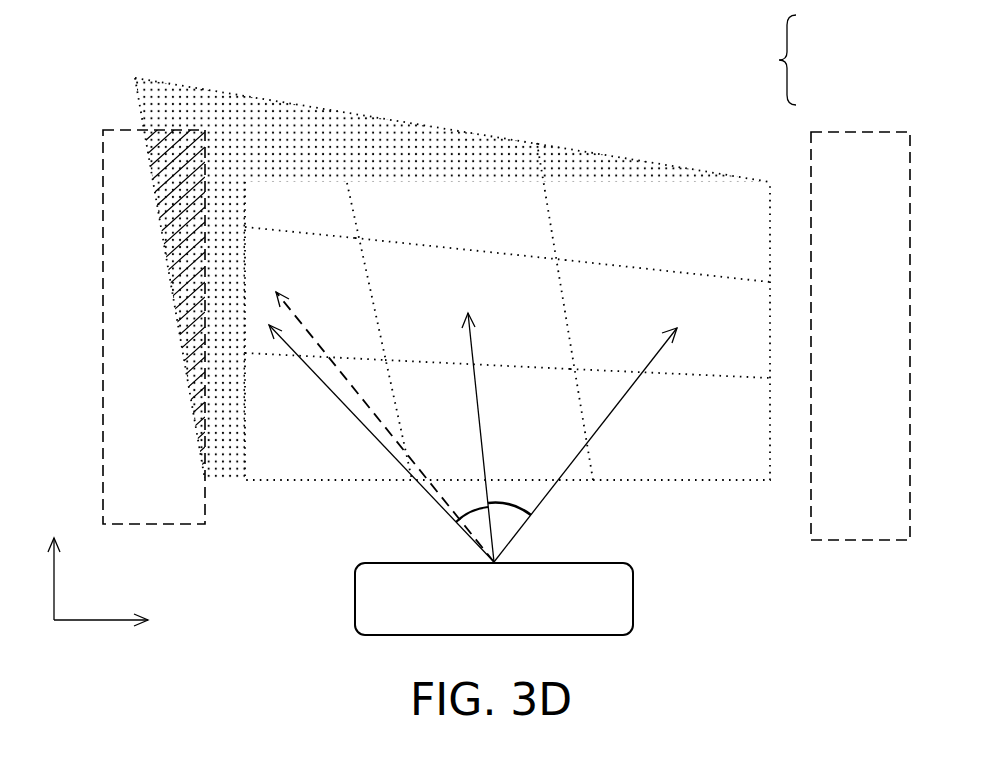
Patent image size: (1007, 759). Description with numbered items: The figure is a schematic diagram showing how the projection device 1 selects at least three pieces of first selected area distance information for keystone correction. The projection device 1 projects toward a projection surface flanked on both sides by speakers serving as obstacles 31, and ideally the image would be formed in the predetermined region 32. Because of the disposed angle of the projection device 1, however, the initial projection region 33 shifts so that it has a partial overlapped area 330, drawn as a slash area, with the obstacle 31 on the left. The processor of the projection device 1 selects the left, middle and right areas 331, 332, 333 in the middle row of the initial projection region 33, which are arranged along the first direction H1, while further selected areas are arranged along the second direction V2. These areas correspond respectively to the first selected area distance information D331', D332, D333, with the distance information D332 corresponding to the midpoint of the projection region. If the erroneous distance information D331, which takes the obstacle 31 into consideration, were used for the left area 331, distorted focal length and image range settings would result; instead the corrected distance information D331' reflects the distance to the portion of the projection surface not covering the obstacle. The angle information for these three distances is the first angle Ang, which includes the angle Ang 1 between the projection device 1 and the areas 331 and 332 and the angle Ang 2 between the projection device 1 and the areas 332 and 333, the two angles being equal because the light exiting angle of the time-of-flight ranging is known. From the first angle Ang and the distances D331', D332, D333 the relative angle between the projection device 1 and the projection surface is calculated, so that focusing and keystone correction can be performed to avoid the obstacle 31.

The projection device 1 is at (635, 598).
The obstacle 31 is at (158, 525).
The predetermined region 32 is at (617, 182).
The initial projection region 33 is at (450, 130).
The partial overlapped area 330 is at (200, 395).
The area 331 is at (277, 227).
The area 332 is at (450, 248).
The area 333 is at (655, 270).
The distance information D331 is at (385, 420).
The first selected area distance information D331' is at (378, 443).
The first selected area distance information D332 is at (491, 420).
The first selected area distance information D333 is at (612, 435).
The angle Ang 1 is at (467, 505).
The angle Ang 2 is at (510, 503).
The first angle Ang is at (798, 59).
The second direction V2 is at (55, 564).
The first direction H1 is at (116, 621).